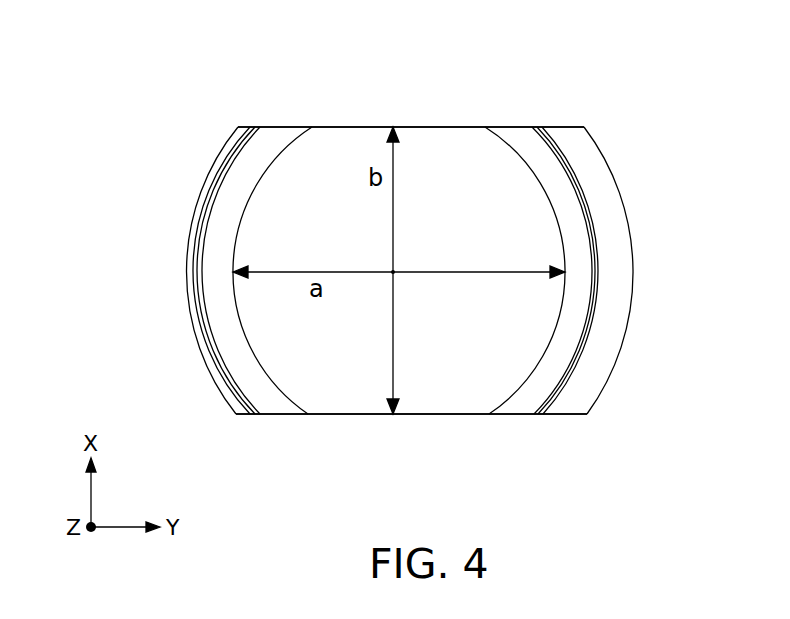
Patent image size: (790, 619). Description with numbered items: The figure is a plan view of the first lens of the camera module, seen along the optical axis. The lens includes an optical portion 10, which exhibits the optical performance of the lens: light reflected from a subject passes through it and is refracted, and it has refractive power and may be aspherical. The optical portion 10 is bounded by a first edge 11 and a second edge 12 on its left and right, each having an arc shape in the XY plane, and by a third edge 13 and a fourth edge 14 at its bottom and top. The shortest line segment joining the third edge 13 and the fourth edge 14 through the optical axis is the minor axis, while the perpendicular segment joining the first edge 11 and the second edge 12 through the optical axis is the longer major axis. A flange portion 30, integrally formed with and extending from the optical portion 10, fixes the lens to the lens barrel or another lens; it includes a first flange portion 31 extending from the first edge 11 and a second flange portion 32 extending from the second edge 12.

The optical portion 10 is at (448, 401).
The first edge 11 is at (232, 293).
The second edge 12 is at (565, 292).
The third edge 13 is at (355, 414).
The fourth edge 14 is at (380, 127).
The flange portion 30 is at (98, 10).
The first flange portion 31 is at (218, 240).
The second flange portion 32 is at (578, 239).